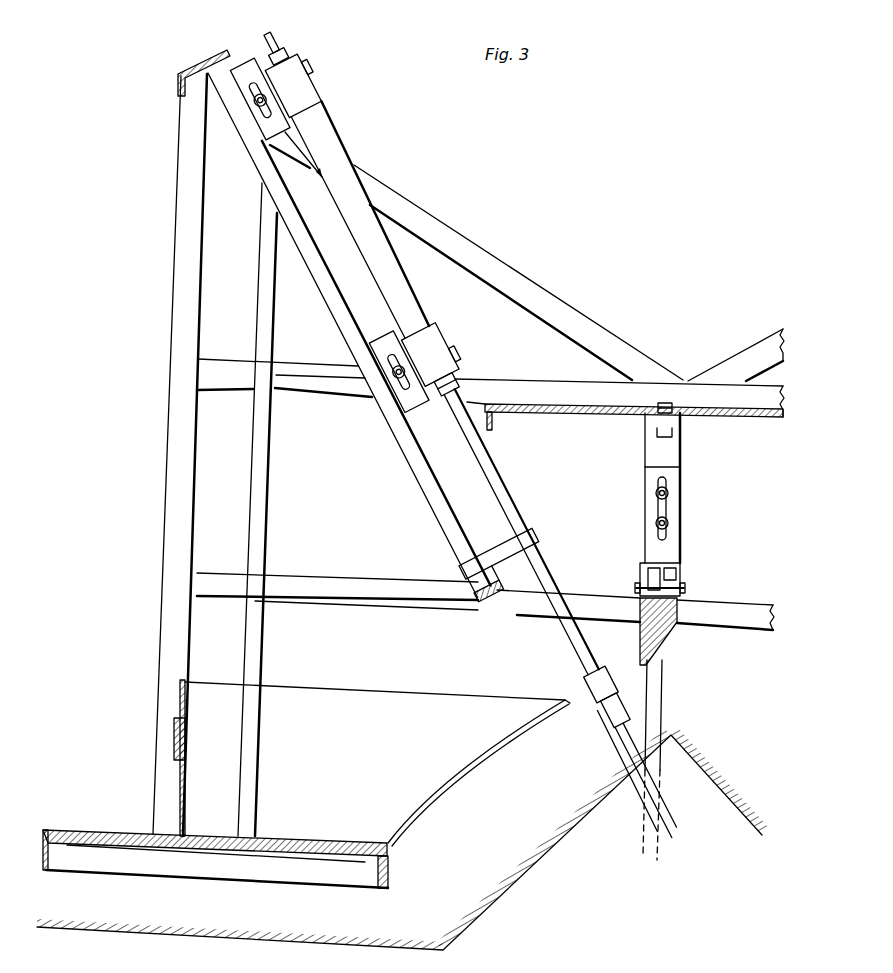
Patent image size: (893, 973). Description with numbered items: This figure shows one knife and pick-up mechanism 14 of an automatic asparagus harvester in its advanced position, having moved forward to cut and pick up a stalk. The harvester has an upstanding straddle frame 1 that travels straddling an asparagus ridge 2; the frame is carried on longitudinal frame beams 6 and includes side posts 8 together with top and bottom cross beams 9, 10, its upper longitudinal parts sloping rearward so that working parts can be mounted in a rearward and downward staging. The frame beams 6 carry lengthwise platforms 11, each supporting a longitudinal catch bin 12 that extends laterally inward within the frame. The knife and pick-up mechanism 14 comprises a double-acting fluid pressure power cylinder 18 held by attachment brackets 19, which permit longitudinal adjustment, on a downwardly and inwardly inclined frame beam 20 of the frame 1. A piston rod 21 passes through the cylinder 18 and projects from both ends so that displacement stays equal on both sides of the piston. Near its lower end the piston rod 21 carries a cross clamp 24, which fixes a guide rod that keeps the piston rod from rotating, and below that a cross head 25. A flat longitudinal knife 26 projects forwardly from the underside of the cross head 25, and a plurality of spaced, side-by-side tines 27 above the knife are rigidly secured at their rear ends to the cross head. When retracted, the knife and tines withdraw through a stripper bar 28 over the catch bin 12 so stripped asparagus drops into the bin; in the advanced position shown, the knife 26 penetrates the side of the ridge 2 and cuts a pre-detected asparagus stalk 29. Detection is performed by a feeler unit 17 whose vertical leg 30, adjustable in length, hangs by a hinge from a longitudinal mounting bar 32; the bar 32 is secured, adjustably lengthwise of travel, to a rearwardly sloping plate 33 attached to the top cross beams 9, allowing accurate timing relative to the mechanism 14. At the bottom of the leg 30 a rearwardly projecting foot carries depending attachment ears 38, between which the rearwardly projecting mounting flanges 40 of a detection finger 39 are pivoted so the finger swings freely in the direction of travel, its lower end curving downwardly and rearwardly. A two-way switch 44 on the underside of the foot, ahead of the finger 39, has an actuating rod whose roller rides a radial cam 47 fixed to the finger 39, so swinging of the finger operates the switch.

The upstanding straddle frame 1 is at (172, 291).
The asparagus ridge 2 is at (540, 849).
The longitudinal frame beams 6 is at (48, 848).
The side posts 8 is at (172, 440).
The top cross beams 9 is at (502, 387).
The bottom cross beams 10 is at (510, 606).
The platforms 11 is at (290, 841).
The catch bin 12 is at (373, 713).
The knife and pick-up mechanism 14 is at (452, 333).
The feeler unit 17 is at (686, 540).
The power cylinder 18 is at (407, 306).
The attachment brackets 19 is at (286, 108).
The inclined frame beam 20 is at (415, 460).
The piston rod 21 is at (279, 37).
The cross clamp 24 is at (598, 688).
The cross head 25 is at (628, 714).
The knife 26 is at (637, 752).
The tines 27 is at (640, 760).
The stripper bar 28 is at (538, 538).
The asparagus stalk 29 is at (665, 669).
The vertical leg 30 is at (676, 511).
The mounting bar 32 is at (662, 422).
The rearwardly sloping plate 33 is at (588, 418).
The attachment ears 38 is at (681, 573).
The detection finger 39 is at (650, 626).
The mounting flanges 40 is at (686, 588).
The two-way switch 44 is at (643, 564).
The radial cam 47 is at (638, 584).